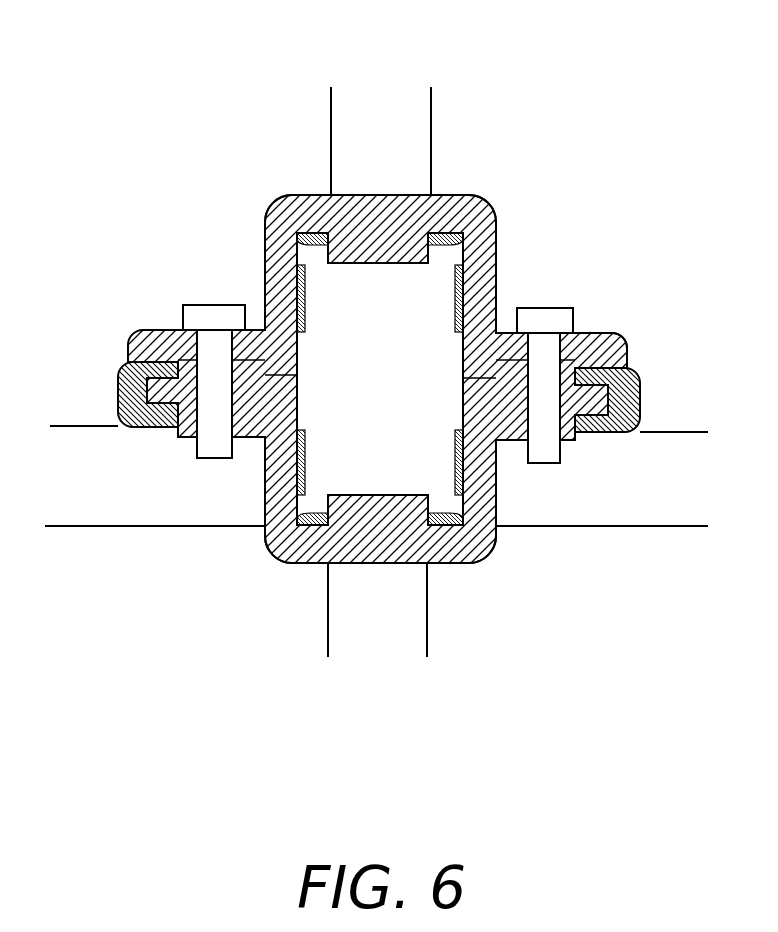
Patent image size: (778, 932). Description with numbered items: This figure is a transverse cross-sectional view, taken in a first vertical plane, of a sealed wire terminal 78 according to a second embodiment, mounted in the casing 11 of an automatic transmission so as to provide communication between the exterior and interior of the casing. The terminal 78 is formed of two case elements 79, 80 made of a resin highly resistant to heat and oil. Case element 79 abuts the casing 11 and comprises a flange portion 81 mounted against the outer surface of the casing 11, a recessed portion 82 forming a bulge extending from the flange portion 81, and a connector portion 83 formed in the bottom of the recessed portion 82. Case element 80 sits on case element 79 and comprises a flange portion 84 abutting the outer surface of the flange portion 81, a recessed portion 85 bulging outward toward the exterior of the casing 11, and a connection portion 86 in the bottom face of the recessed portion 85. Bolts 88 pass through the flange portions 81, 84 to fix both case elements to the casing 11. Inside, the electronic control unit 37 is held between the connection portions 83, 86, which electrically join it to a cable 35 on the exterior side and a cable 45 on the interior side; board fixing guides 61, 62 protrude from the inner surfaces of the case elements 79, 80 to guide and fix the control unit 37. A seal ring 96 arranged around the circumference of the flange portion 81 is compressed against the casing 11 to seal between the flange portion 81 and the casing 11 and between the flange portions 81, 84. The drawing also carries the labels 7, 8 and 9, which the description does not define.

The first region 7 is at (58, 325).
The second region 8 is at (140, 630).
The third region 9 is at (642, 505).
The casing 11 is at (680, 428).
The cable 35 is at (398, 108).
The electronic control unit 37 is at (413, 307).
The cable 45 is at (370, 645).
The board fixing guide 61 is at (459, 220).
The board fixing guide 62 is at (455, 317).
The sealed wire terminal 78 is at (532, 184).
The case element 79 is at (473, 574).
The case element 80 is at (455, 190).
The flange portion 81 is at (513, 440).
The recessed portion 82 is at (294, 545).
The connector portion 83 is at (372, 510).
The flange portion 84 is at (515, 345).
The recessed portion 85 is at (297, 207).
The connection portion 86 is at (372, 240).
The bolt 88 is at (212, 340).
The seal ring 96 is at (635, 387).